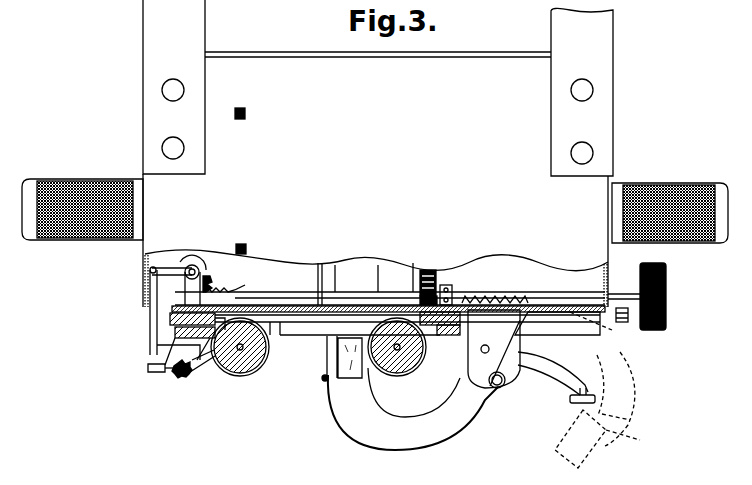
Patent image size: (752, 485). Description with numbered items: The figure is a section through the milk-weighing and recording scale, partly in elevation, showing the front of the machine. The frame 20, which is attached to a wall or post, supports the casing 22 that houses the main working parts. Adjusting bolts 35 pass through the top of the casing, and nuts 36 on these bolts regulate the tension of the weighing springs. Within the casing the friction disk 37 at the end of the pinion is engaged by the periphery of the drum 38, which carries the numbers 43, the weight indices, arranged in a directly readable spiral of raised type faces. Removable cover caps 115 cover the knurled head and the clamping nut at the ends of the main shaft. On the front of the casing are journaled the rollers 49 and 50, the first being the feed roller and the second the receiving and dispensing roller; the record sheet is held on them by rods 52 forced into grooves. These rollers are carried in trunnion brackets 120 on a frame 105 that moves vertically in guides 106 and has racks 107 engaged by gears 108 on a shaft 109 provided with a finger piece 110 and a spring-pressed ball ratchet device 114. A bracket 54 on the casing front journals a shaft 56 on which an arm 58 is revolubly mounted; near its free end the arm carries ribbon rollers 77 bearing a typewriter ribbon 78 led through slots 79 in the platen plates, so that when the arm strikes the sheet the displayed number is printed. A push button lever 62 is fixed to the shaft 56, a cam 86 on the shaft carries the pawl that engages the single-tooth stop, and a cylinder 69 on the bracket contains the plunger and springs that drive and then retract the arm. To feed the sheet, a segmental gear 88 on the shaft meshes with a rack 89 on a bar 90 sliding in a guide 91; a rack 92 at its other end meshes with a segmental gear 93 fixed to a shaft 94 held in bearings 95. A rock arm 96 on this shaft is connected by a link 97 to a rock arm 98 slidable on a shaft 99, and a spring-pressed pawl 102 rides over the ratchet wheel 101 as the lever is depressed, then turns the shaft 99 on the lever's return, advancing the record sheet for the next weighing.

The frame 20 is at (378, 88).
The casing 22 is at (265, 60).
The adjusting bolts 35 is at (240, 108).
The nuts 36 is at (246, 115).
The friction disk 37 is at (318, 272).
The drum 38 is at (386, 266).
The numbers 43 is at (346, 266).
The roller 49 is at (250, 375).
The roller 50 is at (392, 374).
The rods 52 is at (226, 362).
The bracket 54 is at (572, 318).
The shaft 56 is at (490, 349).
The arm 58 is at (656, 393).
The push button lever 62 is at (578, 384).
The cylinder 69 is at (605, 328).
The ribbon rollers 77 is at (330, 380).
The typewriter ribbon 78 is at (322, 379).
The slots 79 is at (305, 337).
The cam 86 is at (515, 385).
The segmental gear 88 is at (494, 349).
The rack 89 is at (496, 296).
The bar 90 is at (290, 297).
The guide 91 is at (458, 285).
The rack 92 is at (232, 290).
The segmental gear 93 is at (208, 275).
The shaft 94 is at (192, 264).
The bearings 95 is at (187, 294).
The rock arm 96 is at (165, 268).
The link 97 is at (178, 325).
The rock arm 98 is at (156, 374).
The shaft 99 is at (183, 378).
The ratchet wheel 101 is at (170, 378).
The pawl 102 is at (162, 355).
The frame 105 is at (178, 334).
The guides 106 is at (172, 318).
The racks 107 is at (216, 292).
The gears 108 is at (218, 282).
The shaft 109 is at (565, 298).
The finger piece 110 is at (667, 294).
The spring-pressed ball ratchet device 114 is at (624, 323).
The cover caps 115 is at (76, 173).
The trunnion brackets 120 is at (282, 336).